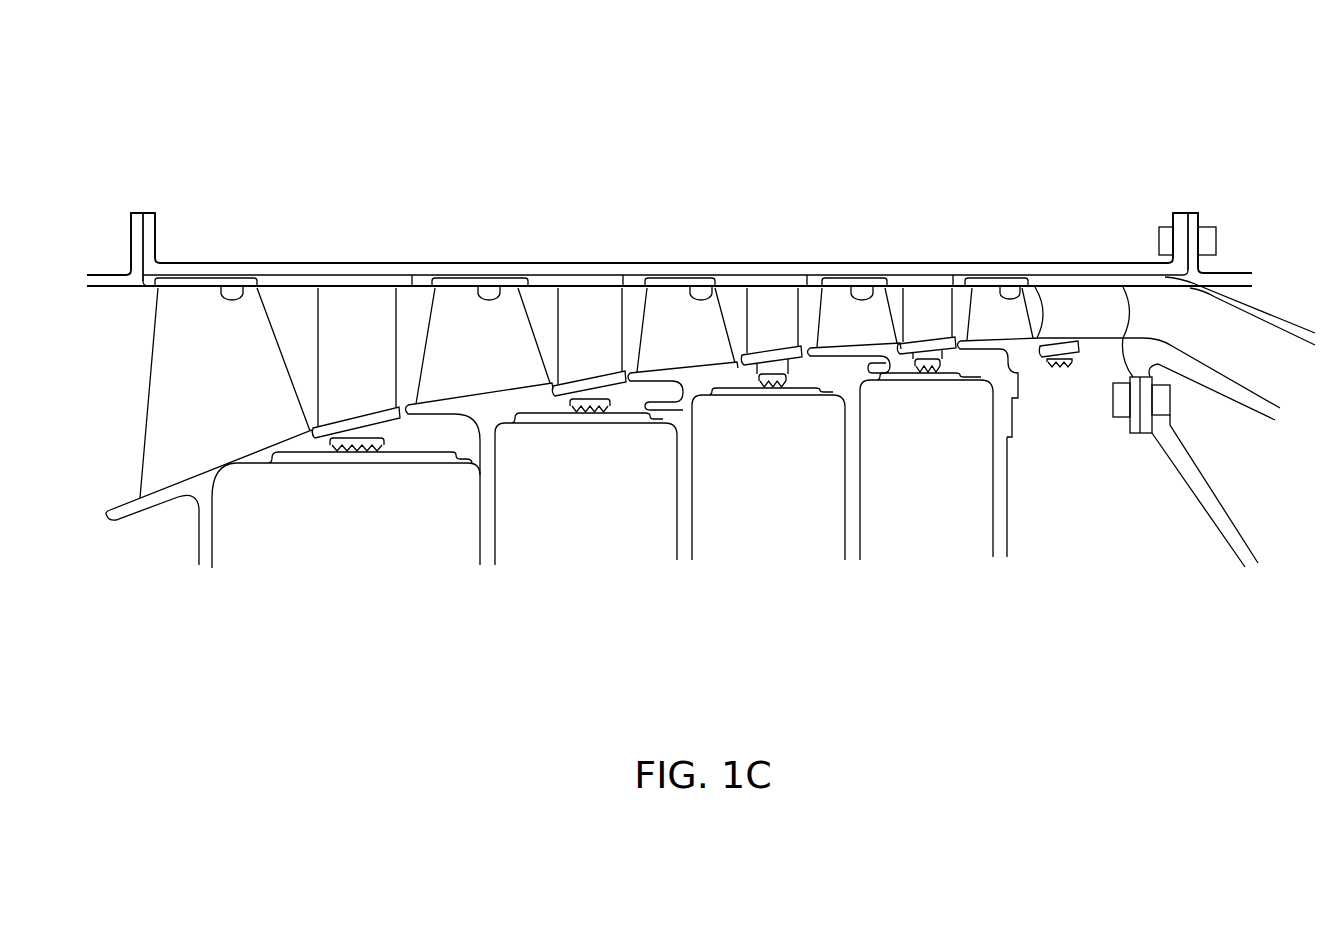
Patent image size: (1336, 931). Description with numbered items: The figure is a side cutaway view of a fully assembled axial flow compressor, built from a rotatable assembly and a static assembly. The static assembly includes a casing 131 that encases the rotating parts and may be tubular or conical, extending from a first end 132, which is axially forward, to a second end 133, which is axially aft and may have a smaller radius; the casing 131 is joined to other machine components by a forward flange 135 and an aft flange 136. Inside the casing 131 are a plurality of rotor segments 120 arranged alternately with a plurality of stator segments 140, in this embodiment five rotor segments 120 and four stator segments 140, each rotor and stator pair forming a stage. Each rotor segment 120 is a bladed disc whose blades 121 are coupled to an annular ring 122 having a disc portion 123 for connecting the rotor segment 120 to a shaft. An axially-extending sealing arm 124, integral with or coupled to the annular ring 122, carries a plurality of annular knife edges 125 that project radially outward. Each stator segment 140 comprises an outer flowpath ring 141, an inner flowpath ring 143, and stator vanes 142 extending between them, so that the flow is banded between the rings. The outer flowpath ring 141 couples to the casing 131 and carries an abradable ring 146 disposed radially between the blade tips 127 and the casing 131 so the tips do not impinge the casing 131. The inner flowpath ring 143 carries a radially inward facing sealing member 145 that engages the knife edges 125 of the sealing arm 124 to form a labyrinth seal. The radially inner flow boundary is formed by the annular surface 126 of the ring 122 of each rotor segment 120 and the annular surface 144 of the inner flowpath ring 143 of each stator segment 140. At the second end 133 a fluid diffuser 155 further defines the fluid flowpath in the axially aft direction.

The rotor segment 120 is at (207, 607).
The blade 121 is at (172, 370).
The annular ring 122 is at (1010, 370).
The disc portion 123 is at (213, 562).
The sealing arm 124 is at (442, 455).
The knife edge 125 is at (773, 386).
The annular surface 126 is at (243, 455).
The blade tip 127 is at (242, 290).
The casing 131 is at (1135, 265).
The first end 132 is at (188, 200).
The second end 133 is at (1157, 148).
The forward flange 135 is at (139, 195).
The aft flange 136 is at (1204, 194).
The stator segment 140 is at (351, 257).
The outer flowpath ring 141 is at (298, 283).
The stator vane 142 is at (334, 345).
The inner flowpath ring 143 is at (330, 440).
The annular surface 144 is at (345, 424).
The sealing member 145 is at (380, 450).
The abradable ring 146 is at (185, 280).
The fluid diffuser 155 is at (1150, 317).